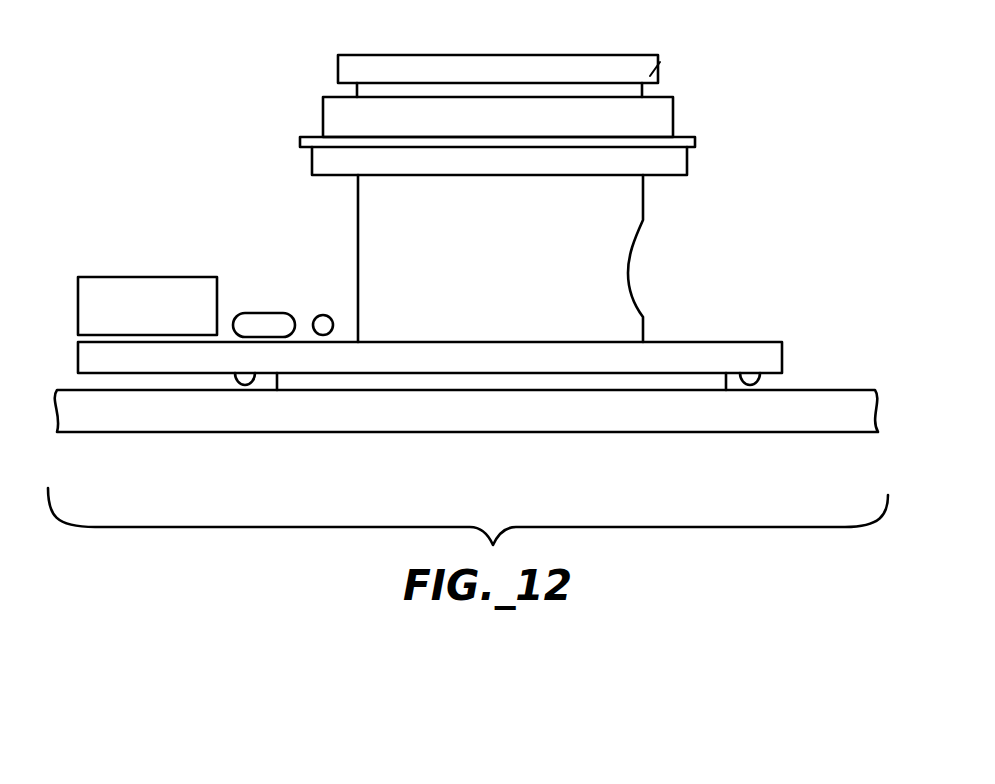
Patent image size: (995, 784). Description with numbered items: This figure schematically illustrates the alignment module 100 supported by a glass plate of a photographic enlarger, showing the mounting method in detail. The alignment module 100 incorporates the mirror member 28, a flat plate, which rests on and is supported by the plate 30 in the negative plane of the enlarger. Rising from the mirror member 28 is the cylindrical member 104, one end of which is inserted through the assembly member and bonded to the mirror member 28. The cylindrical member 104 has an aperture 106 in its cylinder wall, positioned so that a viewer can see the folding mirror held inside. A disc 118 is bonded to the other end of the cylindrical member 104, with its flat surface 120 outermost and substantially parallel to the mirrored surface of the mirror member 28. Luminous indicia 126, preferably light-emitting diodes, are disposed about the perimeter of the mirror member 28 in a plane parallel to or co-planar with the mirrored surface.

The alignment module 100 is at (767, 172).
The flat surface 120 is at (602, 55).
The disc 118 is at (660, 62).
The cylindrical member 104 is at (358, 265).
The aperture 106 is at (630, 275).
The mirror member 28 is at (684, 382).
The luminous indicia 126 is at (246, 387).
The plate 30 is at (811, 407).